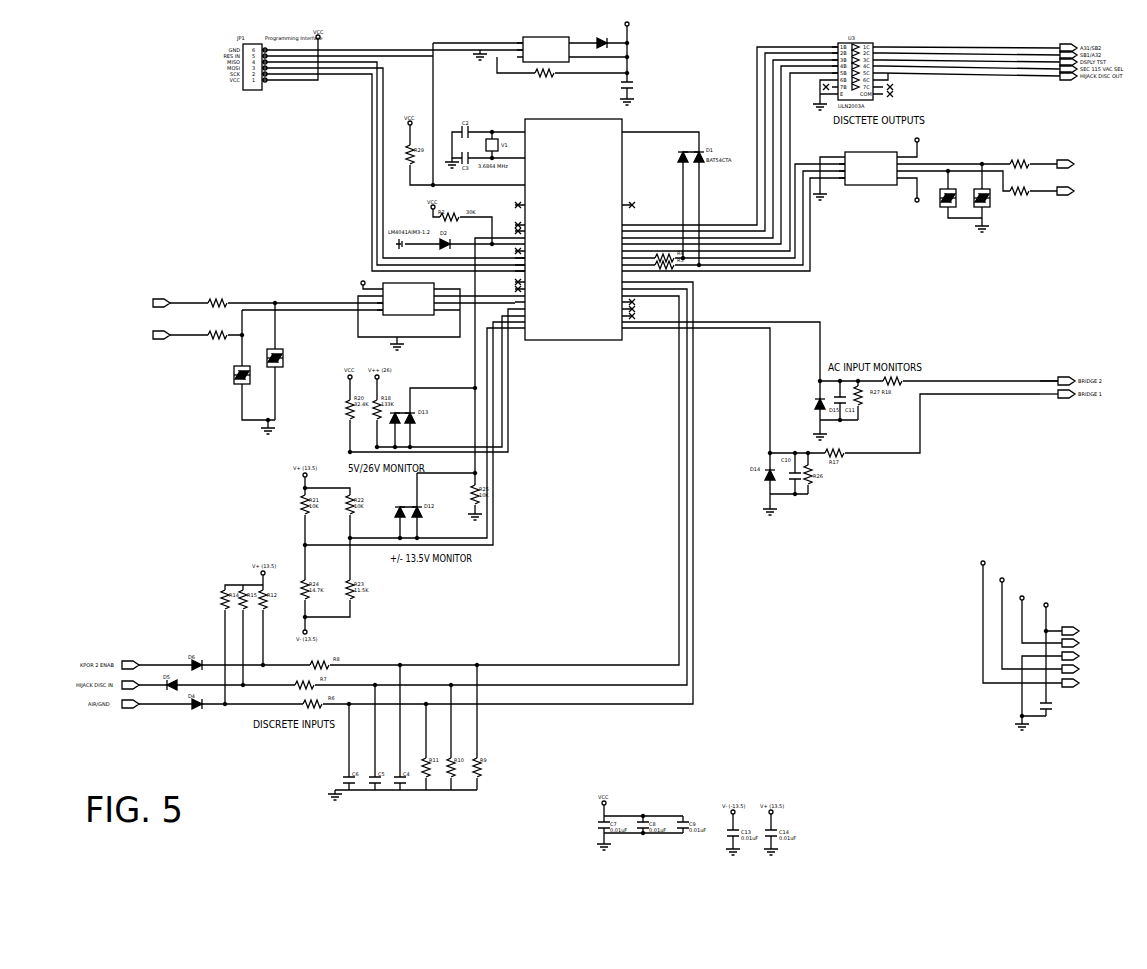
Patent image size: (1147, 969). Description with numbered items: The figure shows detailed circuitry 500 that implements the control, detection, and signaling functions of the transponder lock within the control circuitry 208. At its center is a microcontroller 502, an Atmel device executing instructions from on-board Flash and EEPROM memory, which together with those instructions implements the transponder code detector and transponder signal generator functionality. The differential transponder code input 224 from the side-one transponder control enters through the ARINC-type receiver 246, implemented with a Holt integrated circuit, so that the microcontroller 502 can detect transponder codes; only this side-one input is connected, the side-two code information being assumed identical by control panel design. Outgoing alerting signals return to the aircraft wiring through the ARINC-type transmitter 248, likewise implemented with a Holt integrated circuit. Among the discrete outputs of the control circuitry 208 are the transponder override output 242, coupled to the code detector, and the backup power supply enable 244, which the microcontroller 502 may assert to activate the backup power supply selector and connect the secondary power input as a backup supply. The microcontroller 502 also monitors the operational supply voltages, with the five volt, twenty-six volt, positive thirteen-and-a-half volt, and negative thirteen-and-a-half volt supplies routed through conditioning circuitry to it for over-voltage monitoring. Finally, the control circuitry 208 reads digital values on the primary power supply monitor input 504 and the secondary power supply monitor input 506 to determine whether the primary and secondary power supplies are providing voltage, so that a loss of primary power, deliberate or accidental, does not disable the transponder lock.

The control circuitry 208 is at (682, 95).
The transponder code input 224 is at (102, 330).
The transponder override output 242 is at (995, 76).
The backup power supply enable 244 is at (1043, 69).
The ARINC-429 receiver 246 is at (383, 319).
The ARINC-429 transmitter 248 is at (868, 151).
The detailed circuitry 500 is at (817, 735).
The microcontroller 502 is at (602, 177).
The primary power supply monitor input 504 is at (1004, 396).
The secondary power supply monitor input 506 is at (1004, 381).